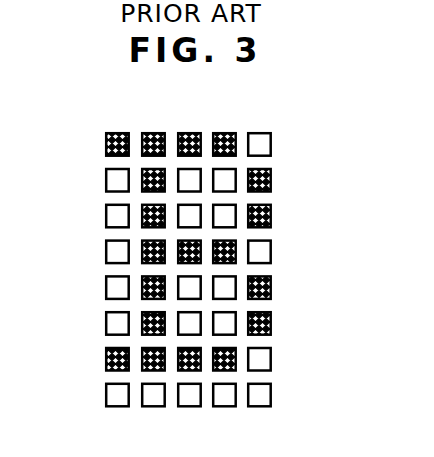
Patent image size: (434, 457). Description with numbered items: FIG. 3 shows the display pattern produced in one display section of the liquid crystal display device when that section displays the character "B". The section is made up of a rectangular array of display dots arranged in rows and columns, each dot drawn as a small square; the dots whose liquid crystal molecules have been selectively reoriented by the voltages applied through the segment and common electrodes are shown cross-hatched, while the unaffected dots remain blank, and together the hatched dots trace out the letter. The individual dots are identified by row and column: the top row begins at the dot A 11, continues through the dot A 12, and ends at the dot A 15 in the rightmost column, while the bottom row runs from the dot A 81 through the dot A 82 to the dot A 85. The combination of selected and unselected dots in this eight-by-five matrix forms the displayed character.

The matrix element A11 11 is at (105, 143).
The matrix element A12 12 is at (149, 132).
The matrix element A15 15 is at (271, 145).
The matrix element A81 81 is at (105, 394).
The matrix element A82 82 is at (151, 407).
The matrix element A85 85 is at (271, 395).